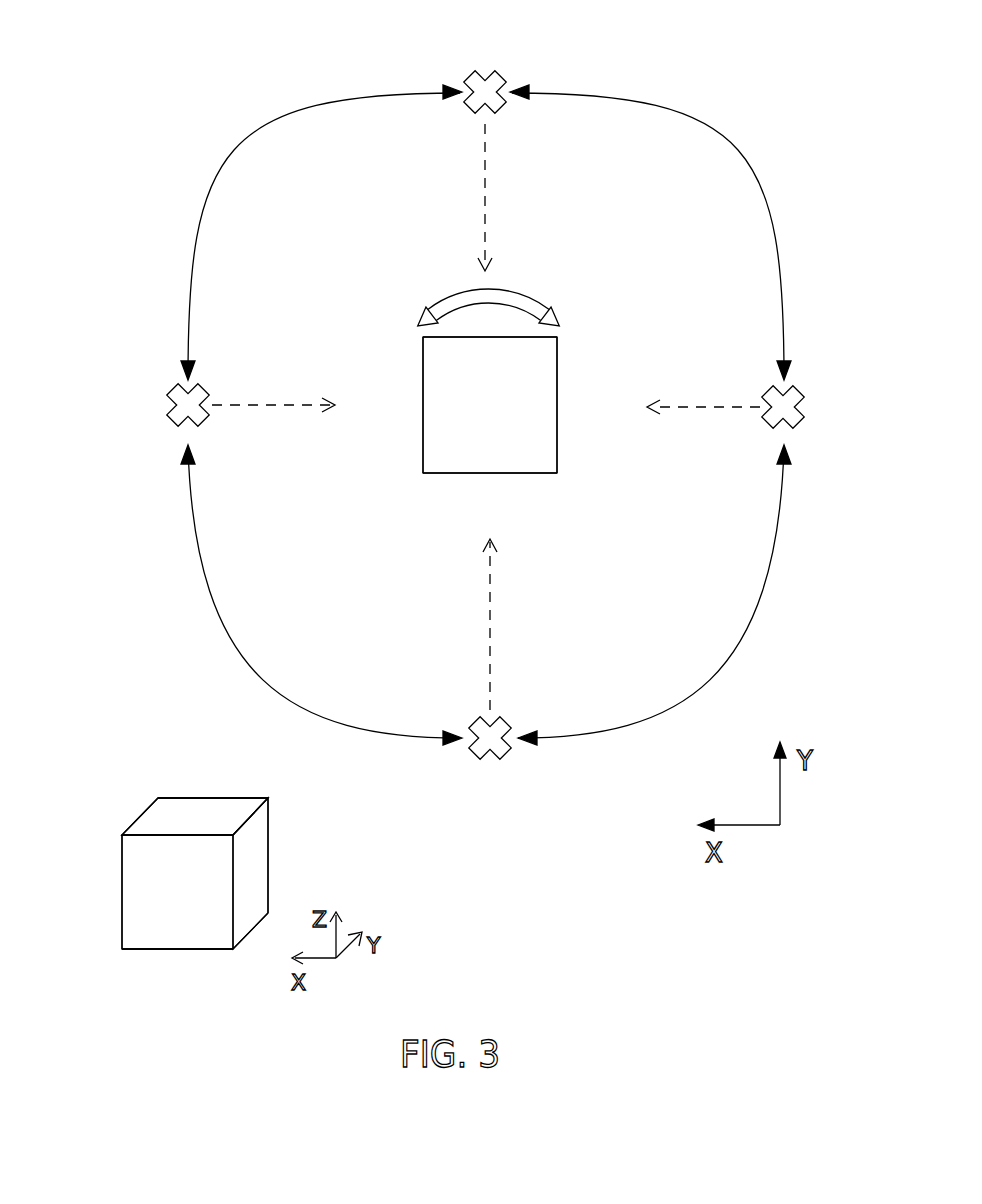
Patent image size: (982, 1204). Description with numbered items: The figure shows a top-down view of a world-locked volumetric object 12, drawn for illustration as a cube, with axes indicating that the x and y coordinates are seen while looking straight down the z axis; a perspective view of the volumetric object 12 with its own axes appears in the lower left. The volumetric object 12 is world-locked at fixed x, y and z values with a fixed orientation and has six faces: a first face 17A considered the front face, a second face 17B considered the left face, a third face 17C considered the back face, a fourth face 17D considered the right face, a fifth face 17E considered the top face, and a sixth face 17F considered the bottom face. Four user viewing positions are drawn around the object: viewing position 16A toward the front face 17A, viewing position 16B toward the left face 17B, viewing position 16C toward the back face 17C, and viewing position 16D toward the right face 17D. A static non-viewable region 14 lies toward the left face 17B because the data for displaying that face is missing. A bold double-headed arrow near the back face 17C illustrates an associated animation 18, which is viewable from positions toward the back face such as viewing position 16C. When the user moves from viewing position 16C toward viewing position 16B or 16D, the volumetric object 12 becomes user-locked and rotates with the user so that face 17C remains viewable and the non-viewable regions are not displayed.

The world-locked volumetric object 12 is at (542, 360).
The static non-viewable region 14 is at (360, 456).
The user viewing position 16A is at (508, 755).
The user viewing position 16B is at (172, 421).
The user viewing position 16C is at (505, 70).
The user viewing position 16D is at (803, 426).
The first face 17A is at (490, 473).
The second face 17B is at (423, 405).
The third face 17C is at (452, 337).
The fourth face 17D is at (557, 405).
The fifth face 17E is at (150, 822).
The sixth face 17F is at (564, 495).
The animation 18 is at (517, 297).